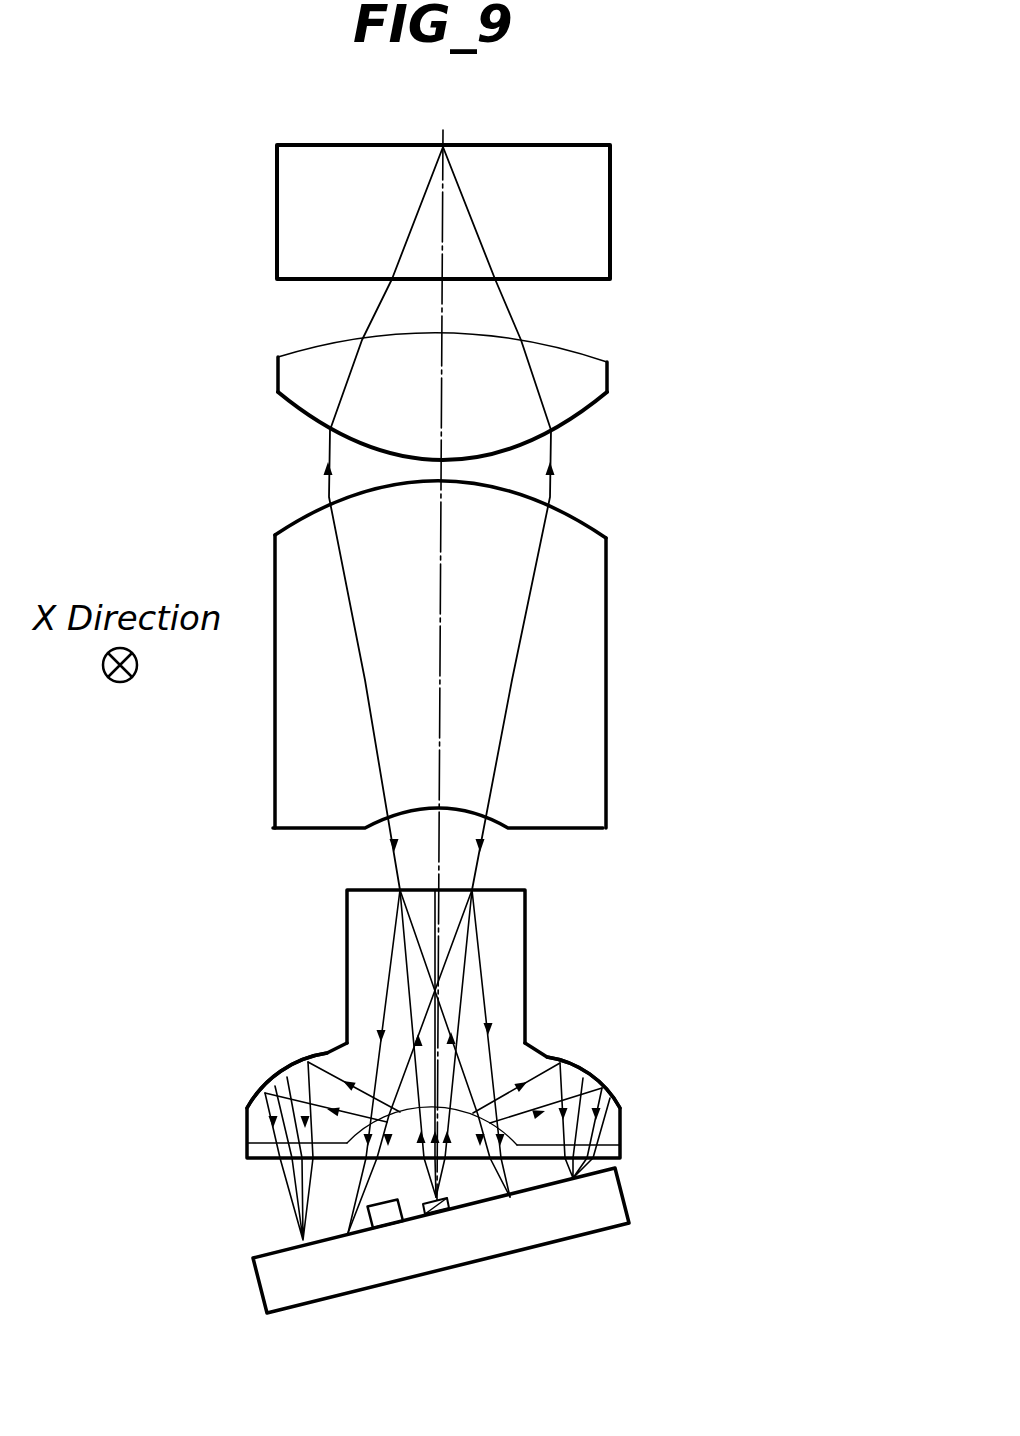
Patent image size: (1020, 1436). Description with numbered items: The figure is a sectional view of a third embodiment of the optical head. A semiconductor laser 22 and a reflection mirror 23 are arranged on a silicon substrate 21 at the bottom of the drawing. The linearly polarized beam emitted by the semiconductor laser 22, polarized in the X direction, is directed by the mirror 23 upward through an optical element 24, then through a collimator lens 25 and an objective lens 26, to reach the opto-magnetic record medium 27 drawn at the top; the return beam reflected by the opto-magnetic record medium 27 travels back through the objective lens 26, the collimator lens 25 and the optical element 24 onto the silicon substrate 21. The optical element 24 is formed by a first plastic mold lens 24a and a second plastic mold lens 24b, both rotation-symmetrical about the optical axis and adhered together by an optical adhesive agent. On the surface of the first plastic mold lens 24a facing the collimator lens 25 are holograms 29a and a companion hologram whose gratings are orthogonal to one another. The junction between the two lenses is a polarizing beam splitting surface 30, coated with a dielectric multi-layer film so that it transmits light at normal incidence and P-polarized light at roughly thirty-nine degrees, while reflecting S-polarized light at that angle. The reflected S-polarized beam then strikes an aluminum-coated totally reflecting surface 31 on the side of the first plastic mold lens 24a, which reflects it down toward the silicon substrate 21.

The silicon substrate 21 is at (625, 1200).
The semiconductor laser 22 is at (366, 1230).
The reflection mirror 23 is at (450, 1196).
The optical element 24 is at (436, 1099).
The first plastic mold lens 24a is at (513, 957).
The second plastic mold lens 24b is at (322, 1155).
The collimator lens 25 is at (608, 572).
The objective lens 26 is at (608, 372).
The opto-magnetic record medium 27 is at (608, 220).
The hologram 29a is at (457, 890).
The polarizing beam splitting surface 30 is at (500, 1130).
The totally reflecting surface 31 is at (268, 1058).